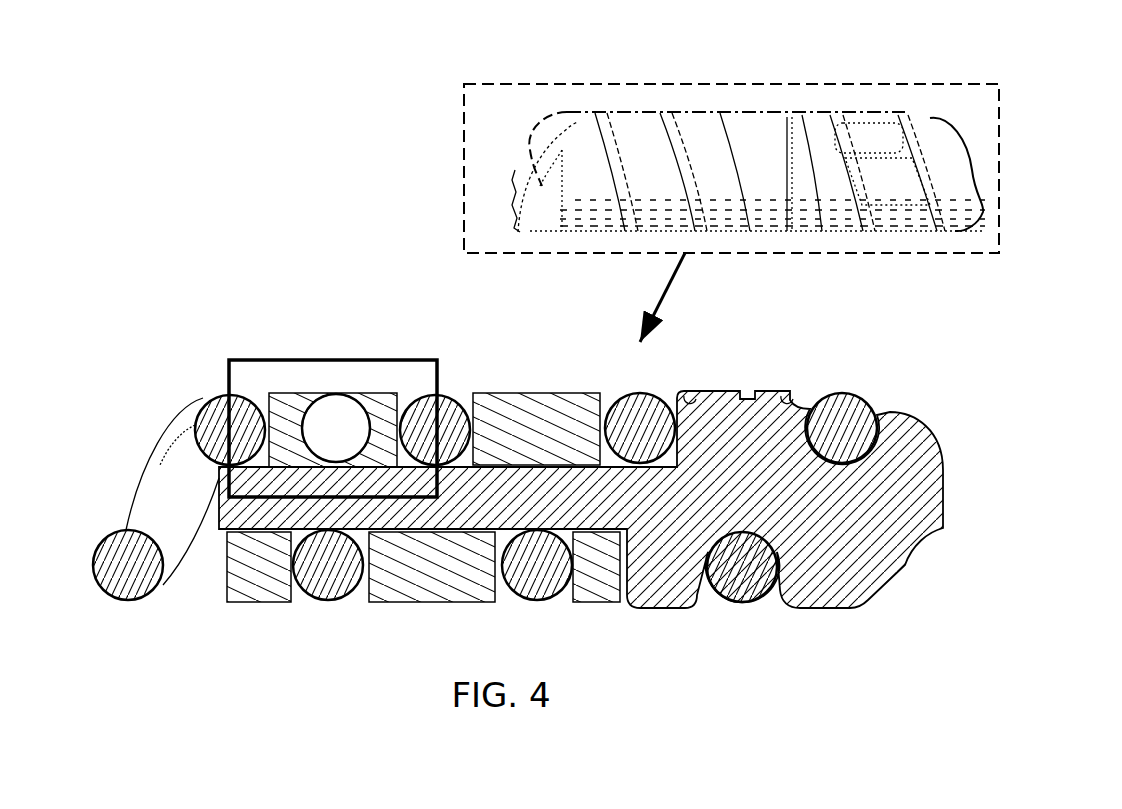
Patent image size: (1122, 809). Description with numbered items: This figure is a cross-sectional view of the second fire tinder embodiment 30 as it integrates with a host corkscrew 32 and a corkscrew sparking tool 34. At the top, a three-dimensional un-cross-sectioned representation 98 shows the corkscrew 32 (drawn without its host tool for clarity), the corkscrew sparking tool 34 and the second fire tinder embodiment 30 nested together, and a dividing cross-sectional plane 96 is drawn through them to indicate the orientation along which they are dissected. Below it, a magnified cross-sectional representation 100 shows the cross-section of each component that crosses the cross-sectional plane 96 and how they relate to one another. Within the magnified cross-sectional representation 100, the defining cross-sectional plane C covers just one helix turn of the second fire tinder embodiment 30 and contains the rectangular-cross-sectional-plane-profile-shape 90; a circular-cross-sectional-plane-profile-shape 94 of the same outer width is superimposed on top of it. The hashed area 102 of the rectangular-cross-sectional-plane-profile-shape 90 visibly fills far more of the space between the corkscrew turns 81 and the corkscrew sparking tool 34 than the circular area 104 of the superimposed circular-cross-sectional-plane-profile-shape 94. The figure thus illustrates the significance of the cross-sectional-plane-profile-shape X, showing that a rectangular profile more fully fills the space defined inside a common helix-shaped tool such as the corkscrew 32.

The un-cross-sectioned representation 98 is at (910, 80).
The cross-sectional plane 96 is at (463, 158).
The second fire tinder embodiment 30 is at (668, 192).
The corkscrew 32 is at (647, 422).
The corkscrew sparking tool 34 is at (737, 450).
The magnified cross-sectional representation 100 is at (868, 360).
The defining cross-sectional plane C is at (228, 368).
The rectangular-cross-sectional-plane-profile-shape 90 is at (277, 395).
The circular-cross-sectional-plane-profile-shape 94 is at (333, 417).
The hashed area 102 is at (293, 405).
The circular area 104 is at (352, 422).
The cross-sectional-plane-profile-shape X is at (330, 385).
The corkscrew turns 81 is at (243, 430).